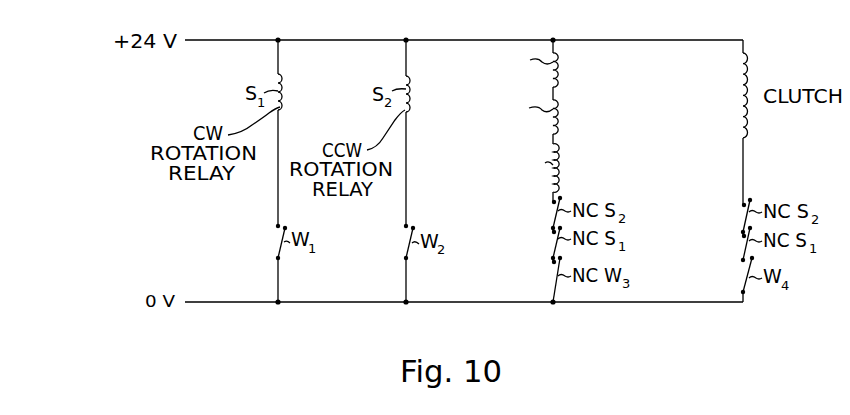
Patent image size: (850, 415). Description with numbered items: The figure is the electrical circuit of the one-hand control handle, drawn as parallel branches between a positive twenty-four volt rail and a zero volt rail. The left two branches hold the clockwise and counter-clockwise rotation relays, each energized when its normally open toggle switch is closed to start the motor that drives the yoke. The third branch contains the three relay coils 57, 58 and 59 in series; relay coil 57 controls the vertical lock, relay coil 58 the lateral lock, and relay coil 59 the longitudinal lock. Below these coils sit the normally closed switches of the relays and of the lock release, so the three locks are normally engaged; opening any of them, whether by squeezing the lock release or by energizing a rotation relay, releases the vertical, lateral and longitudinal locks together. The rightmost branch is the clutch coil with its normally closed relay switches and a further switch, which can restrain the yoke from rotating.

The relay coil 57 is at (560, 78).
The relay coil 58 is at (560, 124).
The relay coil 59 is at (560, 165).